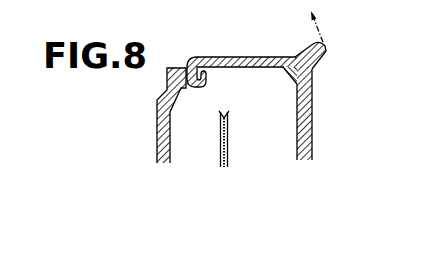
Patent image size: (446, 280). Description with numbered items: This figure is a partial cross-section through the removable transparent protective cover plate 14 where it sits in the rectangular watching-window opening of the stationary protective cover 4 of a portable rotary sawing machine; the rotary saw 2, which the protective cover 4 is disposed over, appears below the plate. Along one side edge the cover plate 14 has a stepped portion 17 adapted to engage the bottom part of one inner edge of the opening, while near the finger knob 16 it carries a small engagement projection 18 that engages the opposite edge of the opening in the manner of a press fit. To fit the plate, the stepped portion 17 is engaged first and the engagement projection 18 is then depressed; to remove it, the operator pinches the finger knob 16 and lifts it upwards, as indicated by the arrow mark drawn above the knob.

The transparent protective cover plate 14 is at (215, 57).
The finger knob 16 is at (324, 54).
The stationary protective cover 4 is at (313, 140).
The engagement projection 18 is at (294, 77).
The stepped portion 17 is at (195, 88).
The rotary saw 2 is at (228, 138).